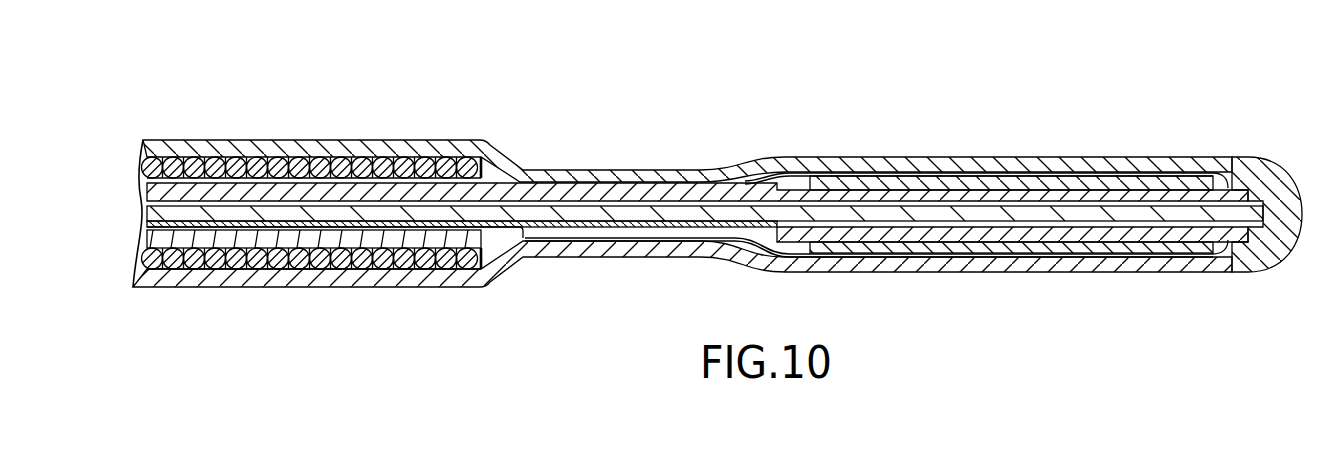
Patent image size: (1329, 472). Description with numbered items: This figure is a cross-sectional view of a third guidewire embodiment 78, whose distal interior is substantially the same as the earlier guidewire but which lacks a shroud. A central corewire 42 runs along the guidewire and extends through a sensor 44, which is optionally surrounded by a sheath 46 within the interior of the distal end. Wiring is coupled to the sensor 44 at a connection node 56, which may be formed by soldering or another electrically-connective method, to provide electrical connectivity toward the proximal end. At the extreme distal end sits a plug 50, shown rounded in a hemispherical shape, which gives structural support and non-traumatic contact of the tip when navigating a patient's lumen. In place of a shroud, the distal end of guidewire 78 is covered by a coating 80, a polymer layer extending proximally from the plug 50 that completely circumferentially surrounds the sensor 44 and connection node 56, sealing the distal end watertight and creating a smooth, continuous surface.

The guidewire 78 is at (218, 105).
The coating 80 is at (1108, 272).
The corewire 42 is at (893, 213).
The sheath 46 is at (636, 229).
The sensor 44 is at (1019, 172).
The connection node 56 is at (746, 168).
The plug 50 is at (1275, 183).